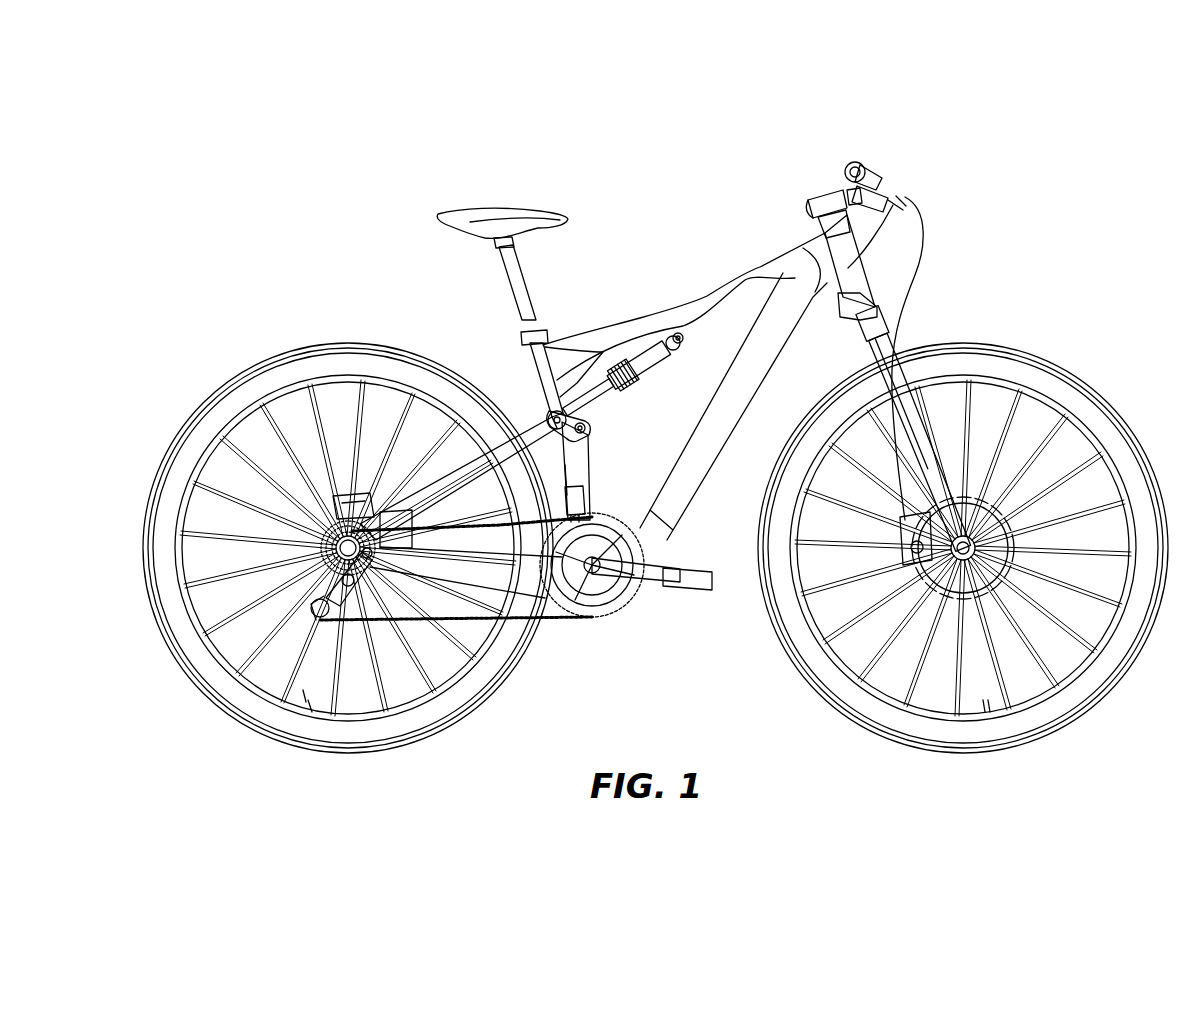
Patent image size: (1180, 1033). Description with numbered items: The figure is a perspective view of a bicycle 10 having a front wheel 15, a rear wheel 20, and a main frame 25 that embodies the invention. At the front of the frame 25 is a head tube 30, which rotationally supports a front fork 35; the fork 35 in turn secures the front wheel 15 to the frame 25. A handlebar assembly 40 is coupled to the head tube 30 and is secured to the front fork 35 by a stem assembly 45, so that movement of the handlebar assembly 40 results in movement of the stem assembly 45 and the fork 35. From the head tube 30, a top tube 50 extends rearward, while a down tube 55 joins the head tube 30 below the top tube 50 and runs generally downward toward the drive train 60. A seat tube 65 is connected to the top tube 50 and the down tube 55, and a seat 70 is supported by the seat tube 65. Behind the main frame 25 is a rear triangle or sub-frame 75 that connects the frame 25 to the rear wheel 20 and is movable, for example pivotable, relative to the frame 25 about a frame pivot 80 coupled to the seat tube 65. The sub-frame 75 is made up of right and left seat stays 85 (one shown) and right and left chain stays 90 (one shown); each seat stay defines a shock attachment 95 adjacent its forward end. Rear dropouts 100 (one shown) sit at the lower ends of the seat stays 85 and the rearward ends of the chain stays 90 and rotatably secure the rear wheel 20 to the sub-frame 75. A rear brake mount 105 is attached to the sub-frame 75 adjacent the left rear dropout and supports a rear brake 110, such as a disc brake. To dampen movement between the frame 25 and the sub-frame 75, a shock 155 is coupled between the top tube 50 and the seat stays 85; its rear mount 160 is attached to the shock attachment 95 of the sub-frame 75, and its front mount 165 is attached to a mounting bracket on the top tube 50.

The bicycle 10 is at (543, 94).
The front wheel 15 is at (1033, 362).
The rear wheel 20 is at (230, 378).
The main frame 25 is at (797, 299).
The head tube 30 is at (847, 258).
The front fork 35 is at (878, 323).
The handlebar assembly 40 is at (883, 180).
The stem assembly 45 is at (832, 206).
The top tube 50 is at (711, 301).
The down tube 55 is at (727, 405).
The drive train 60 is at (545, 654).
The seat tube 65 is at (535, 362).
The seat 70 is at (492, 208).
The sub-frame 75 is at (552, 481).
The frame pivot 80 is at (585, 425).
The seat stay 85 is at (485, 447).
The chain stay 90 is at (497, 572).
The shock attachment 95 is at (578, 442).
The rear dropout 100 is at (350, 498).
The rear brake mount 105 is at (343, 496).
The rear brake 110 is at (330, 518).
The shock 155 is at (653, 364).
The rear mount 160 is at (550, 416).
The front mount 165 is at (684, 350).